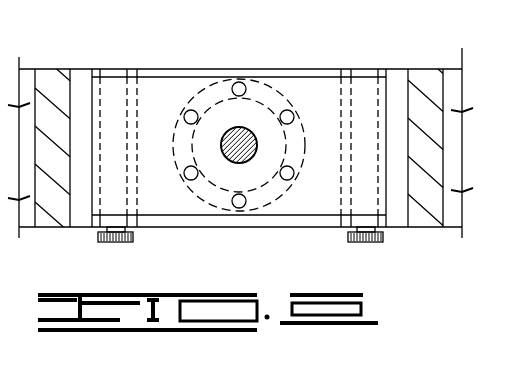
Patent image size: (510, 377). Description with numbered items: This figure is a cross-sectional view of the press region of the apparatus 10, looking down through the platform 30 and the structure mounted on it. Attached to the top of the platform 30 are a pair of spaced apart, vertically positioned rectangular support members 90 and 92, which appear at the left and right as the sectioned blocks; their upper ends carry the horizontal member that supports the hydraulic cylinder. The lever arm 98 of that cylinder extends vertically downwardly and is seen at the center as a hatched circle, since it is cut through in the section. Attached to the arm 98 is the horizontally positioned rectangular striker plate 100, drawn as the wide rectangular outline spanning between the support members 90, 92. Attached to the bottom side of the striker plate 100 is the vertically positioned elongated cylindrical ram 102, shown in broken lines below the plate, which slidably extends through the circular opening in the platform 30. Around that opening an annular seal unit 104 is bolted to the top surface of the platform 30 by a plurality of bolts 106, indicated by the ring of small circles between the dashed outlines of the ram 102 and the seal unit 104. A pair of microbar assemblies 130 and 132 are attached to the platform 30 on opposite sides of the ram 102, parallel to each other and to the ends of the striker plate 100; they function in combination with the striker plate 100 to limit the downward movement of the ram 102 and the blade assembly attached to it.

The mounting assembly 10 is at (251, 66).
The platform 30 is at (78, 78).
The support member 90 is at (48, 85).
The support member 92 is at (425, 82).
The lever arm 98 is at (257, 146).
The striker plate 100 is at (166, 47).
The cylindrical ram 102 is at (272, 108).
The annular seal unit 104 is at (203, 97).
The bolts 106 is at (246, 86).
The microbar assembly 130 is at (98, 217).
The microbar assembly 132 is at (358, 217).